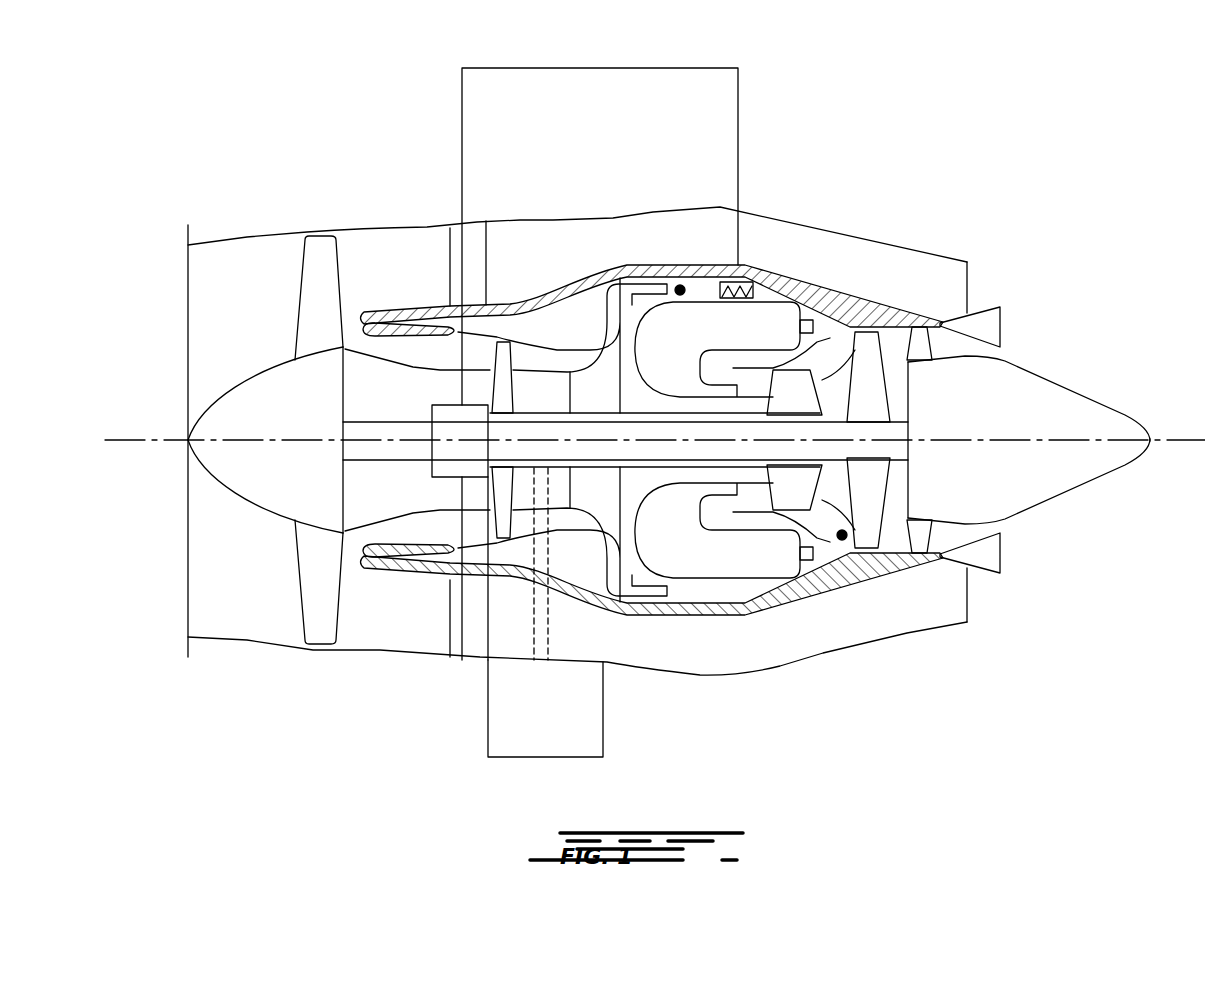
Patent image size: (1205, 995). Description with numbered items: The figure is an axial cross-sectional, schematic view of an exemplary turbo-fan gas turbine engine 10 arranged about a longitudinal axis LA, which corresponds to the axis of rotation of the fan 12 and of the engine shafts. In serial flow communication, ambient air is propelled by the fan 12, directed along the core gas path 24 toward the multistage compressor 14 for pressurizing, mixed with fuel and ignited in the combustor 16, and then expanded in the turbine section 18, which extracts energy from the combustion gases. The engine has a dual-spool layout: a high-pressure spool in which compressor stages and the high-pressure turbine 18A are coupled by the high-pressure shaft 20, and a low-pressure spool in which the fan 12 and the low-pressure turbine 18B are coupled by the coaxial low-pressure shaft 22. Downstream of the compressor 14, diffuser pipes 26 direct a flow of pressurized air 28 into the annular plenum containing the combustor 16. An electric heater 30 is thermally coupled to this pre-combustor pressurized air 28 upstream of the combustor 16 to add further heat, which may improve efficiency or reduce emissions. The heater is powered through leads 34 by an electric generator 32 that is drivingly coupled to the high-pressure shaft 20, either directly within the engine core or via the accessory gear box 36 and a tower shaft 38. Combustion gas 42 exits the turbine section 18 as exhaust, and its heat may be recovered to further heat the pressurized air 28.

The gas turbine engine 10 is at (878, 118).
The fan 12 is at (317, 575).
The multistage compressor 14 is at (555, 360).
The combustor 16 is at (707, 325).
The turbine section 18 is at (832, 498).
The high-pressure turbine 18A is at (798, 385).
The low-pressure turbine 18B is at (867, 358).
The high-pressure shaft 20 is at (668, 484).
The low-pressure shaft 22 is at (362, 325).
The core gas path 24 is at (425, 355).
The diffuser pipes 26 is at (616, 290).
The pressurized air 28 is at (680, 284).
The electric heater 30 is at (742, 282).
The electric generator 32 is at (465, 477).
The leads 34 is at (462, 108).
The accessory gear box 36 is at (505, 737).
The tower shaft 38 is at (547, 623).
The combustion gas 42 is at (843, 541).
The longitudinal axis LA is at (126, 437).